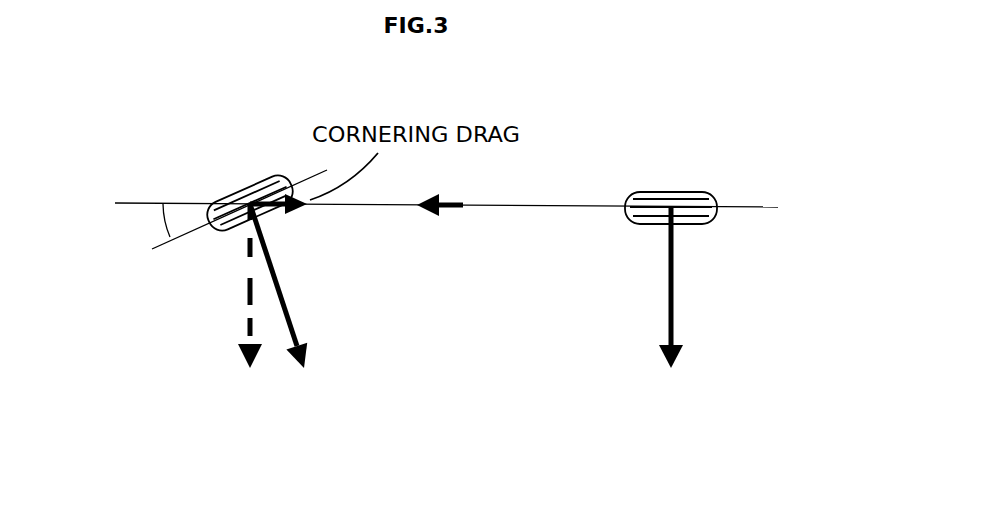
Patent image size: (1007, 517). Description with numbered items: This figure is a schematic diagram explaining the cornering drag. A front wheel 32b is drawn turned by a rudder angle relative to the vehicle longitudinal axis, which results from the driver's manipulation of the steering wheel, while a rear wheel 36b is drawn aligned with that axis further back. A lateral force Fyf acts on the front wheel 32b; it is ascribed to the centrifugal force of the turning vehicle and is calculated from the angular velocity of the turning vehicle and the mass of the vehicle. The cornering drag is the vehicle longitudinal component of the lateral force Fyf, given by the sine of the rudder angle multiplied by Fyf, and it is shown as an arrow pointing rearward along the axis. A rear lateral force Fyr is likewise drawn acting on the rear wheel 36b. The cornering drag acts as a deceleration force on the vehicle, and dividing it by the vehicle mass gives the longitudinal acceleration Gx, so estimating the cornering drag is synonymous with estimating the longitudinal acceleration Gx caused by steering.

The front wheel 32b is at (243, 188).
The rear wheel 36b is at (668, 192).
The lateral force Fyf is at (400, 363).
The rear lateral force Fyr is at (716, 312).
The longitudinal acceleration Gx is at (447, 210).